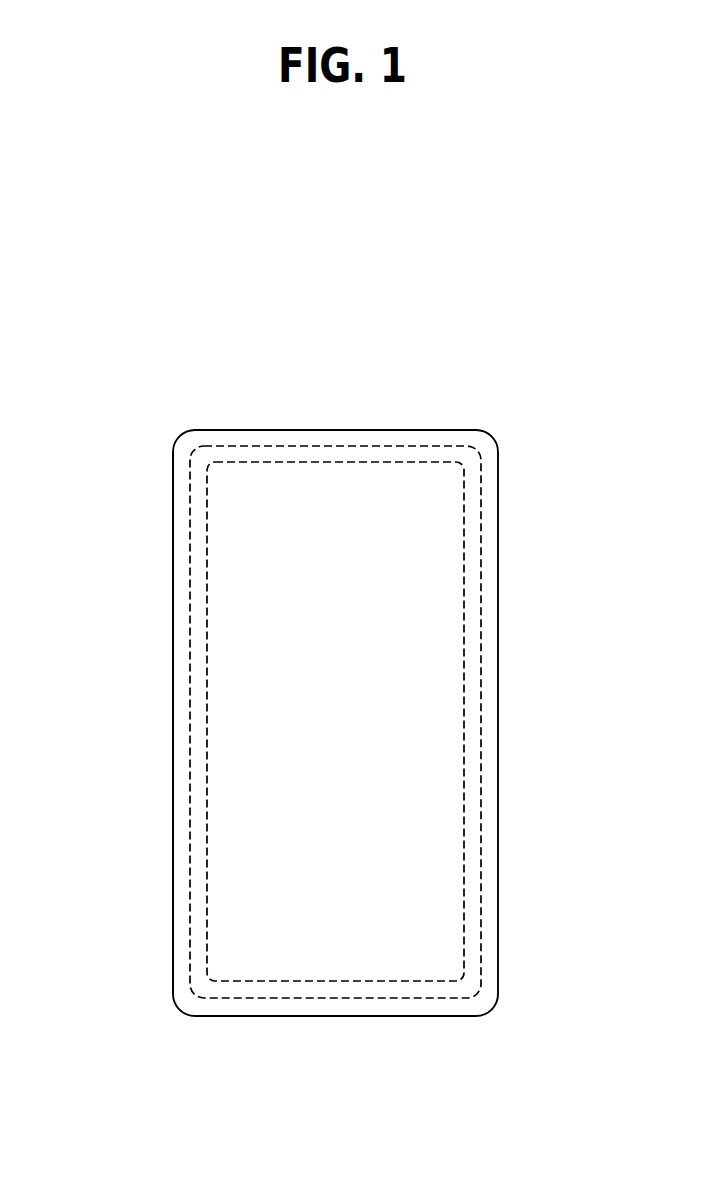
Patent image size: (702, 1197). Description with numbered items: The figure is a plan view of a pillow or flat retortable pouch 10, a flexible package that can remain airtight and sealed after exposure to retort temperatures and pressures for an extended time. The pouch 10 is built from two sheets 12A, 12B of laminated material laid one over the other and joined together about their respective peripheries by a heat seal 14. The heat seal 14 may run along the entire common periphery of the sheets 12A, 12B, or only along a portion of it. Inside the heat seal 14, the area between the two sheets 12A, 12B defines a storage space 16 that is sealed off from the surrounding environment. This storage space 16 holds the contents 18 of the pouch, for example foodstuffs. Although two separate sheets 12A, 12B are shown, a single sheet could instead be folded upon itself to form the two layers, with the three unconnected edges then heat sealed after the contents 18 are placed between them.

The pillow retortable pouch 10 is at (127, 678).
The sheet of laminated material 12A is at (235, 488).
The sheet of laminated material 12B is at (227, 553).
The heat seal 14 is at (197, 832).
The storage space 16 is at (432, 708).
The contents 18 is at (440, 903).